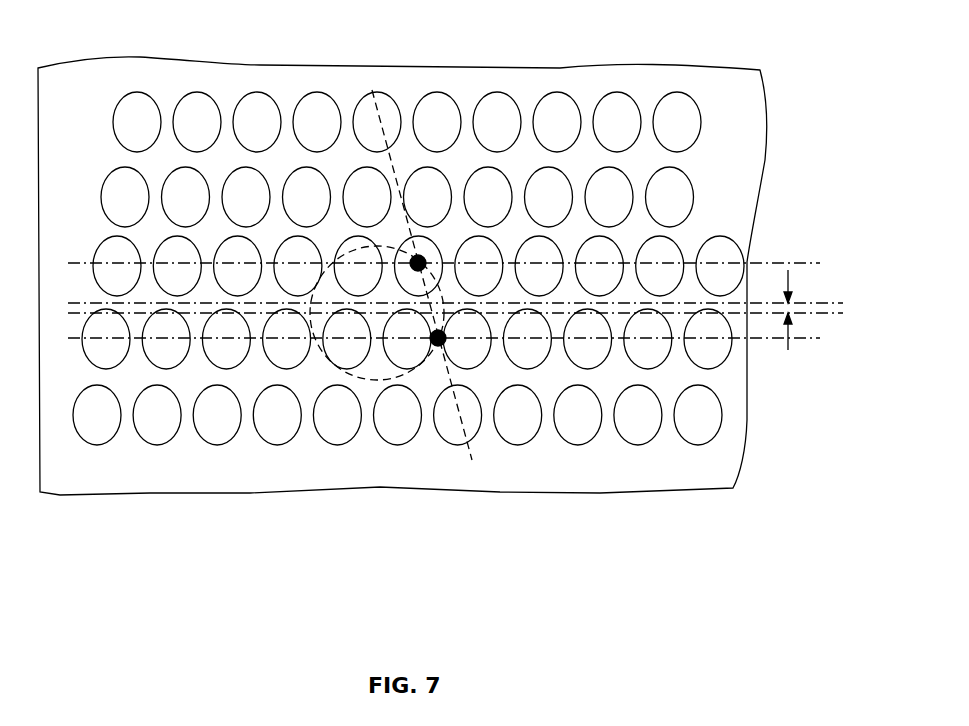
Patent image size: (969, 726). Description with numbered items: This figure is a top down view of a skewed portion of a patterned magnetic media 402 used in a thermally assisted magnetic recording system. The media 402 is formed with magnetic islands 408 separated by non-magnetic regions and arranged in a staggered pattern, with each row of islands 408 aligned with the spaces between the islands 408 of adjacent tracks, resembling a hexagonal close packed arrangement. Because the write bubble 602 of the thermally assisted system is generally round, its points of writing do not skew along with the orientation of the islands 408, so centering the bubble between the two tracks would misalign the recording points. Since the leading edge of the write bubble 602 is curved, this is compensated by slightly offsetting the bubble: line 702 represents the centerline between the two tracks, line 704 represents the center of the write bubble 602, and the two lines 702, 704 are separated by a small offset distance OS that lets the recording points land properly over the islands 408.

The patterned media 402 is at (408, 77).
The magnetic islands 408 is at (257, 103).
The centerline 702 is at (851, 280).
The line 704 is at (845, 313).
The offset distance OS is at (790, 336).
The write bubble 602 is at (355, 377).